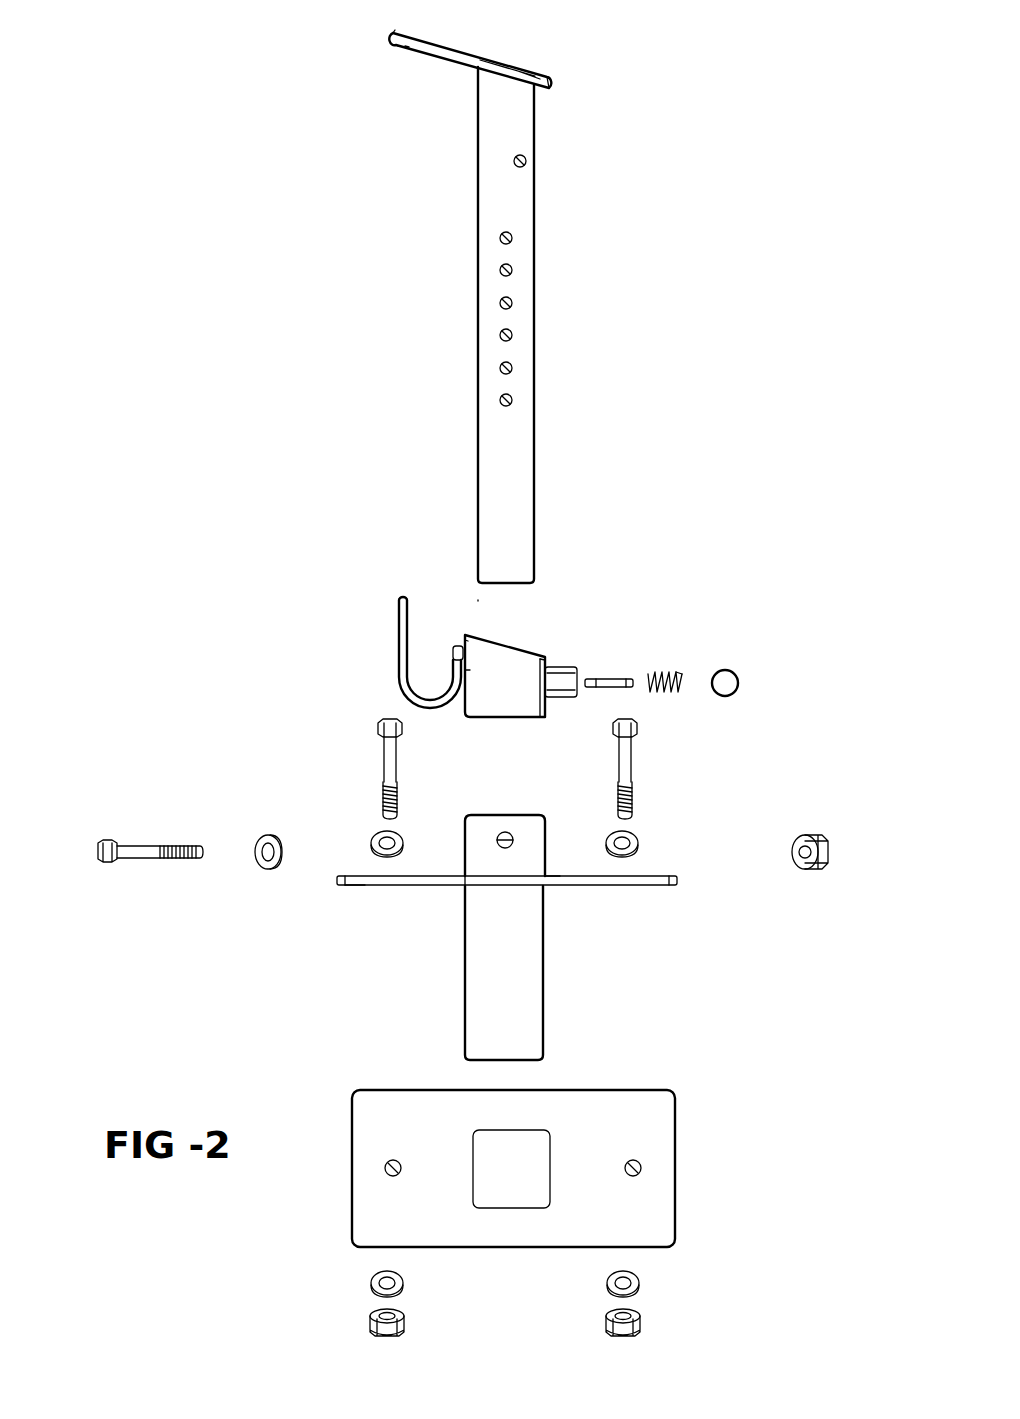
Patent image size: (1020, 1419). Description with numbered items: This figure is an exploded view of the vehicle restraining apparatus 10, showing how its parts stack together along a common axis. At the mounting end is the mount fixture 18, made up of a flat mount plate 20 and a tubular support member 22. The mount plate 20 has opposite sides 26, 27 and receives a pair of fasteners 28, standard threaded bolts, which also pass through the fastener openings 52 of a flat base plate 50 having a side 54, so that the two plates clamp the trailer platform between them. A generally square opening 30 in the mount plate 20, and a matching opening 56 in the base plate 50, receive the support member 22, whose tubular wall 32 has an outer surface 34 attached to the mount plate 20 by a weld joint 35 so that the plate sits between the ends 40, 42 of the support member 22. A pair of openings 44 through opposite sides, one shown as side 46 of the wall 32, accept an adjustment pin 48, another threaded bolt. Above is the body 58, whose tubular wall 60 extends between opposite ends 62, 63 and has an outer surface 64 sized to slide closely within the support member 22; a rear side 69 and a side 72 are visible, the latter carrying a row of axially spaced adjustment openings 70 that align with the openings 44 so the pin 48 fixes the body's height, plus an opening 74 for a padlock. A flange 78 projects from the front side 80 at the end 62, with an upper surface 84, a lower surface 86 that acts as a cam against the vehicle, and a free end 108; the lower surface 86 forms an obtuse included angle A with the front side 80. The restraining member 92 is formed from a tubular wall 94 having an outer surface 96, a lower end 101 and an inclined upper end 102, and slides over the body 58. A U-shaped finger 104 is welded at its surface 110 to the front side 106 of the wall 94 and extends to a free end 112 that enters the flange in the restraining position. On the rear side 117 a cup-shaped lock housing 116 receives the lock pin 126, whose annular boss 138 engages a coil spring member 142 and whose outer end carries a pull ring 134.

The apparatus 10 is at (678, 178).
The mount fixture 18 is at (501, 926).
The mount plate 20 is at (636, 886).
The support member 22 is at (545, 965).
The side of the mount plate 26 is at (360, 877).
The side of the mount plate 27 is at (360, 886).
The fasteners 28 is at (380, 723).
The opening 30 is at (465, 890).
The tubular wall 32 is at (535, 1040).
The outer surface 34 is at (465, 981).
The weld joint 35 is at (547, 876).
The end of the support member 40 is at (507, 815).
The end of the support member 42 is at (505, 1060).
The openings 44 is at (513, 840).
The side of the tubular wall 46 is at (472, 998).
The adjustment pin 48 is at (143, 858).
The base plate 50 is at (676, 1100).
The fastener openings 52 is at (385, 1170).
The side of the base plate 54 is at (633, 1105).
The opening 56 is at (505, 1208).
The body 58 is at (534, 505).
The tubular wall 60 is at (530, 555).
The end of the body 62 is at (549, 85).
The end of the body 63 is at (495, 583).
The outer surface 64 is at (478, 444).
The rear side 69 is at (534, 185).
The adjustment openings 70 is at (512, 240).
The side of the body 72 is at (534, 448).
The opening 74 is at (526, 160).
The flange 78 is at (520, 50).
The front side 80 is at (478, 158).
The upper surface 84 is at (393, 33).
The lower surface 86 is at (409, 47).
The restraining member 92 is at (550, 668).
The tubular wall 94 is at (468, 708).
The outer surface 96 is at (512, 708).
The lower end 101 is at (540, 718).
The upper end 102 is at (508, 650).
The finger 104 is at (399, 652).
The front side 106 is at (455, 650).
The free end of the flange 108 is at (398, 46).
The surface 110 is at (468, 672).
The free end 112 is at (403, 598).
The lock housing 116 is at (566, 666).
The rear side 117 is at (548, 707).
The lock pin 126 is at (604, 679).
The ring 134 is at (738, 675).
The annular boss 138 is at (592, 690).
The spring member 142 is at (682, 674).
The obtuse included angle A is at (437, 54).